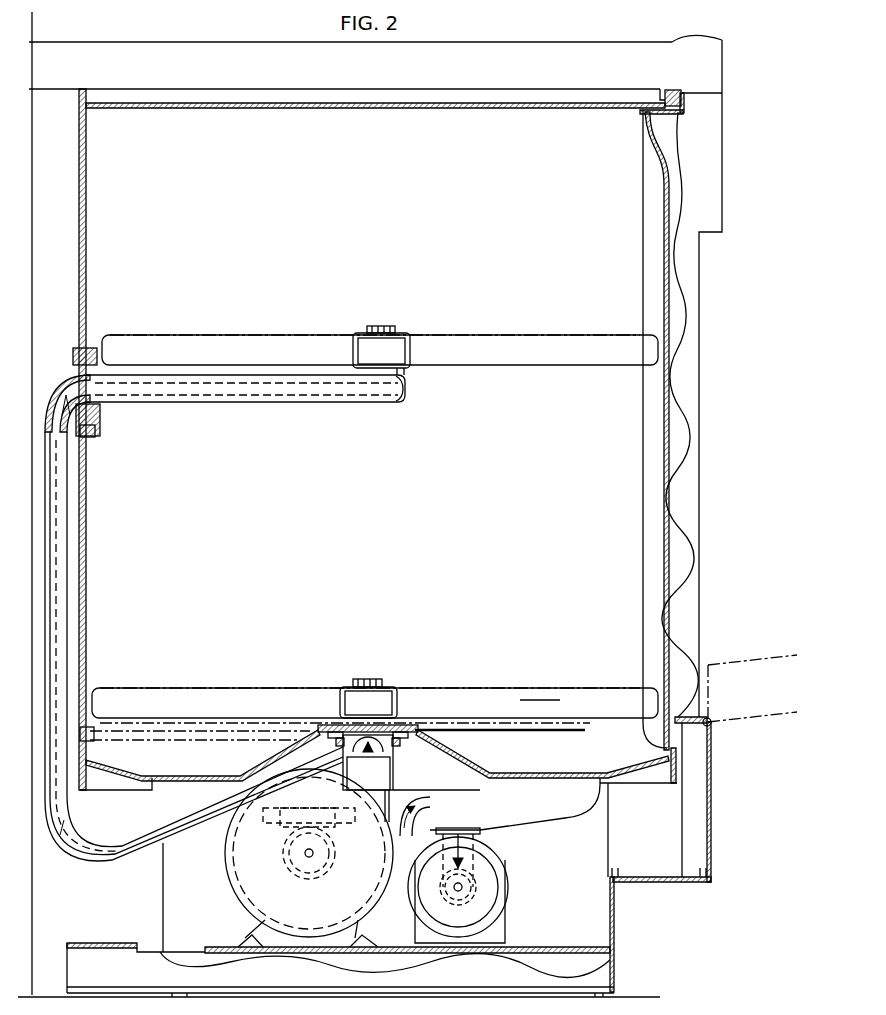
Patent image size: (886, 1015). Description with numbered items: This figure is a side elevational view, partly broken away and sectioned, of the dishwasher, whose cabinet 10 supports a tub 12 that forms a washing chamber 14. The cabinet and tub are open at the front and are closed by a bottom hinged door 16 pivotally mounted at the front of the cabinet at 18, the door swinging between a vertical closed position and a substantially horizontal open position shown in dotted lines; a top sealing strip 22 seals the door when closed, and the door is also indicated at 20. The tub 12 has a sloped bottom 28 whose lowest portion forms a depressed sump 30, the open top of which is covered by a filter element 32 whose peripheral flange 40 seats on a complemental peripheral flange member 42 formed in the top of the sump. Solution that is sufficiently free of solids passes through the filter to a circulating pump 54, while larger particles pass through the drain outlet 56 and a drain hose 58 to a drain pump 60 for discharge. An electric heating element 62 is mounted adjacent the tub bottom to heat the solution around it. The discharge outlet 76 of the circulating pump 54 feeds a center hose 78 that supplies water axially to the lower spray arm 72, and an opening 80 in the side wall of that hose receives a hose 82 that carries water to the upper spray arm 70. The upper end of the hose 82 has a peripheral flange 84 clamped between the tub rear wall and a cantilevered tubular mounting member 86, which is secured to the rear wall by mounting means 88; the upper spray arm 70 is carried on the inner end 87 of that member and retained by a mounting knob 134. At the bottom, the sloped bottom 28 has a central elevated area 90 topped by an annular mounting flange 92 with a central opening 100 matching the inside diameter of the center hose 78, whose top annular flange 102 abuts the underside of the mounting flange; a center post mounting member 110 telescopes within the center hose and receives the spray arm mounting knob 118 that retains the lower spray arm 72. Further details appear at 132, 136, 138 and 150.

The cabinet 10 is at (705, 275).
The tub 12 is at (86, 300).
The washing chamber 14 is at (583, 472).
The door 16 is at (700, 392).
The door pivot mounting 18 is at (710, 727).
The door 20 is at (722, 158).
The top sealing strip 22 is at (672, 92).
The sloped bottom 28 is at (140, 768).
The sump 30 is at (567, 820).
The filter element 32 is at (527, 770).
The peripheral flange 40 is at (610, 780).
The peripheral flange member 42 is at (608, 782).
The circulating pump 54 is at (247, 868).
The drain outlet 56 is at (480, 832).
The drain hose 58 is at (476, 866).
The drain pump 60 is at (517, 898).
The electric heating element 62 is at (600, 768).
The upper spray arm 70 is at (432, 330).
The lower spray arm 72 is at (418, 685).
The discharge outlet 76 is at (402, 810).
The center hose 78 is at (395, 742).
The opening 80 is at (370, 752).
The hose 82 is at (67, 535).
The peripheral flange 84 is at (80, 370).
The tubular mounting member 86 is at (137, 404).
The inner end 87 is at (390, 402).
The mounting means 88 is at (98, 437).
The central elevated area 90 is at (455, 731).
The annular mounting flange 92 is at (330, 727).
The central opening 100 is at (345, 728).
The top annular flange 102 is at (350, 738).
The center post mounting member 110 is at (398, 725).
The spray arm mounting knob 118 is at (368, 672).
The wall fitting 132 is at (98, 420).
The mounting knob 134 is at (405, 392).
The upper hub 136 is at (405, 370).
The upper hub cap 138 is at (375, 323).
The rack support 150 is at (530, 695).